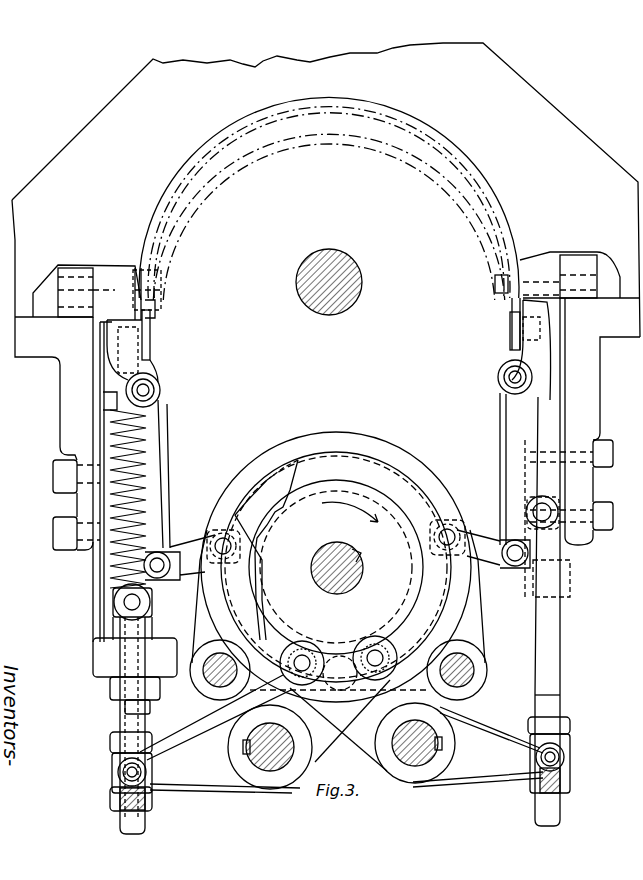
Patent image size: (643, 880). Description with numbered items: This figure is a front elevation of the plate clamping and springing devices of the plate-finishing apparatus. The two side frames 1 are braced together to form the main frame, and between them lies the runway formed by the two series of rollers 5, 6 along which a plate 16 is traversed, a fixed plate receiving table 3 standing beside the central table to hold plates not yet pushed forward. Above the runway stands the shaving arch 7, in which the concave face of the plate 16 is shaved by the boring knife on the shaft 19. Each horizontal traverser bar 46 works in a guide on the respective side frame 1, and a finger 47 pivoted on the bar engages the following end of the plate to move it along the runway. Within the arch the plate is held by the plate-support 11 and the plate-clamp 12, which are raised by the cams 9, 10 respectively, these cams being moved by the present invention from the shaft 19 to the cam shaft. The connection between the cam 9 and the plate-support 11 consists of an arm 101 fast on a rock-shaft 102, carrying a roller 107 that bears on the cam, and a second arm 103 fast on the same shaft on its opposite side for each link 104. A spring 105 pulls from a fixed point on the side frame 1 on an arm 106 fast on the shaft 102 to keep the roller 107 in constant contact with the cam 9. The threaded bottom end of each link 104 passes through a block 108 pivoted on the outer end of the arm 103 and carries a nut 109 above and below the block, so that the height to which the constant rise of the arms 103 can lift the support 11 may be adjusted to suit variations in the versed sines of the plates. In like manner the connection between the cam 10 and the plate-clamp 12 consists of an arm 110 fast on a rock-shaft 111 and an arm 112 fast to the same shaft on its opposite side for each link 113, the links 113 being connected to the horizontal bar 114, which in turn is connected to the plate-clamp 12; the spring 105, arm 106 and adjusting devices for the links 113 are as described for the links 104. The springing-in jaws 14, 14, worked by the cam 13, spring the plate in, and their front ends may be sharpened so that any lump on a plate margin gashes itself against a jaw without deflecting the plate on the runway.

The side frame 1 is at (62, 396).
The fixed plate receiving table 3 is at (337, 548).
The series of rollers 5 is at (150, 348).
The series of rollers 6 is at (510, 338).
The shaving arch 7 is at (326, 196).
The cam 9 is at (416, 482).
The cam 10 is at (252, 480).
The plate-support 11 is at (560, 478).
The plate-clamp 12 is at (93, 350).
The cam 13 is at (207, 594).
The springing-in jaw 14 is at (141, 310).
The plate 16 is at (330, 144).
The shaft 19 is at (329, 260).
The horizontal traverser bar 46 is at (93, 290).
The finger 47 is at (161, 292).
The arm 101 is at (338, 732).
The rock-shaft 102 is at (415, 726).
The arm 103 is at (502, 727).
The link 104 is at (556, 650).
The spring 105 is at (110, 798).
The arm 106 is at (200, 790).
The roller 107 is at (288, 652).
The block 108 is at (118, 773).
The nut 109 is at (110, 740).
The arm 110 is at (352, 721).
The rock-shaft 111 is at (270, 731).
The arm 112 is at (236, 792).
The link 113 is at (115, 688).
The horizontal bar 114 is at (113, 602).